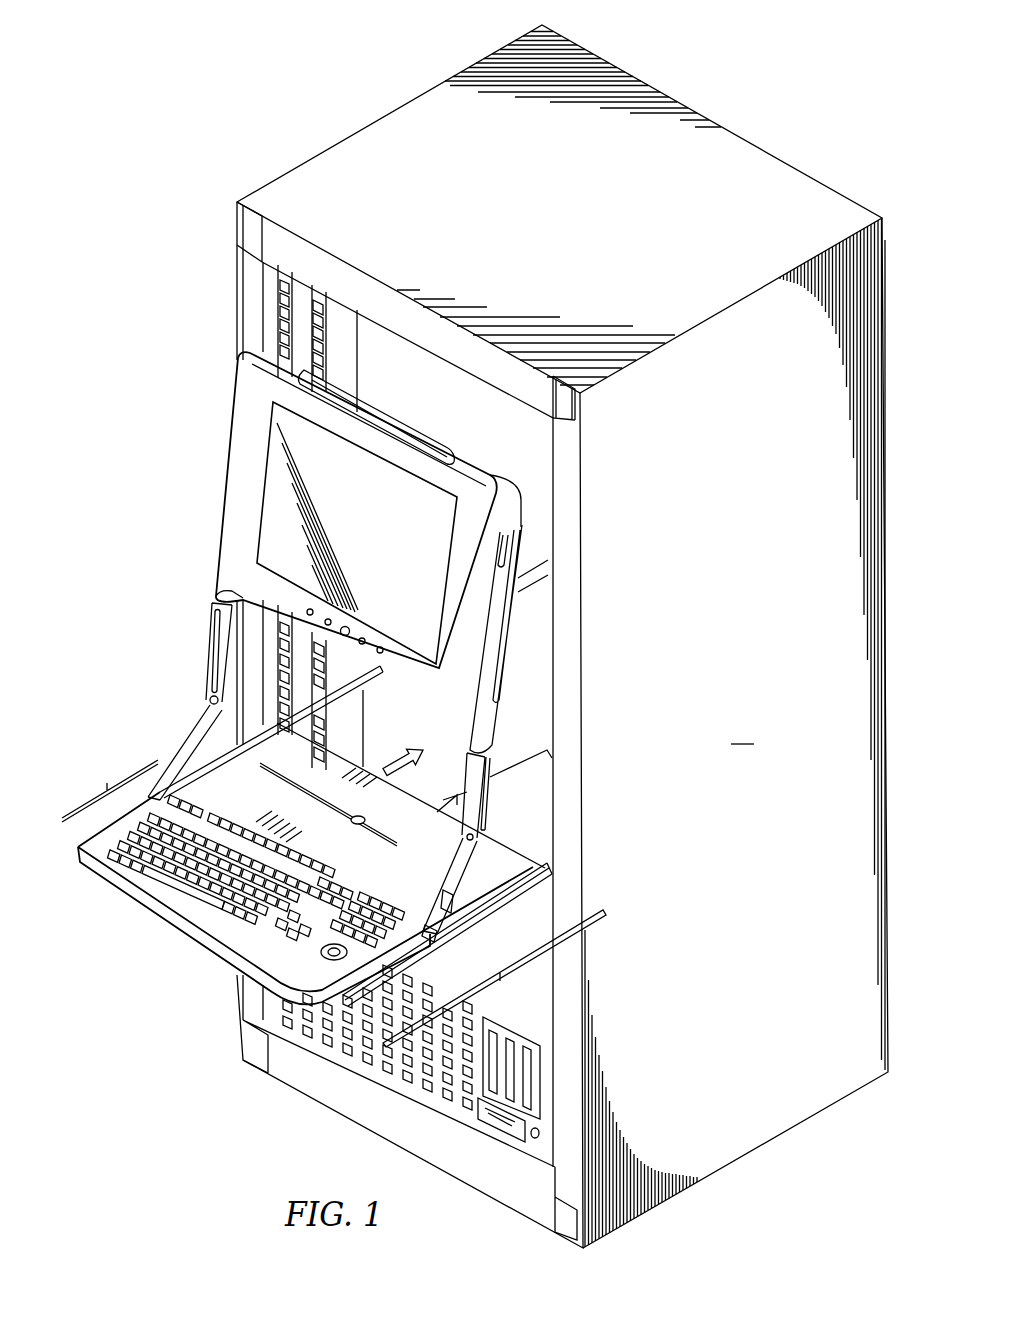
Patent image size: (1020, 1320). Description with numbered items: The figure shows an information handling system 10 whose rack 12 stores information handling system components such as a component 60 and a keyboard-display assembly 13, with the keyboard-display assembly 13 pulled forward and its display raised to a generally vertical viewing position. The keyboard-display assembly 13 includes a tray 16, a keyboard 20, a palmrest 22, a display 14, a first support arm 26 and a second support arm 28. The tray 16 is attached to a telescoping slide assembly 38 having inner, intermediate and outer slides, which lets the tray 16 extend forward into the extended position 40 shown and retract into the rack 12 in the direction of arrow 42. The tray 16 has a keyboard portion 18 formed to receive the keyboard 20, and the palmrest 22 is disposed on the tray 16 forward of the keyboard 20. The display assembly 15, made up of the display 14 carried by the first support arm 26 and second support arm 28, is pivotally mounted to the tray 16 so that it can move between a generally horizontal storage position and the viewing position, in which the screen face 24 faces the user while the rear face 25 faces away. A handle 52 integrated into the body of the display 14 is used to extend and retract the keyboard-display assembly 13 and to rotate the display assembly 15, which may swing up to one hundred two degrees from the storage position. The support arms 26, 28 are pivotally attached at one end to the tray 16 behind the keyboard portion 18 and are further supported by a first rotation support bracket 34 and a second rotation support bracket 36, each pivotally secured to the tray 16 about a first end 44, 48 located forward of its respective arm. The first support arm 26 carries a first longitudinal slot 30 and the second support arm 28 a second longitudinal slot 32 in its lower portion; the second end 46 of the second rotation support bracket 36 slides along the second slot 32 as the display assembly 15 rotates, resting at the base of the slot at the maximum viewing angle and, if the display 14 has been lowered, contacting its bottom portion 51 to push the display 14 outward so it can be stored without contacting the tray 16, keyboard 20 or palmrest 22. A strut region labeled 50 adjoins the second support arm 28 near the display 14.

The information handling system 10 is at (128, 510).
The rack 12 is at (562, 636).
The keyboard-display assembly 13 is at (122, 931).
The display 14 is at (238, 480).
The display assembly 15 is at (145, 638).
The tray 16 is at (235, 735).
The keyboard portion 18 is at (110, 789).
The keyboard 20 is at (340, 868).
The palmrest 22 is at (205, 928).
The screen face 24 is at (397, 555).
The rear face 25 is at (518, 493).
The first support arm 26 is at (212, 623).
The second support arm 28 is at (488, 768).
The first longitudinal slot 30 is at (213, 657).
The second longitudinal slot 32 is at (484, 805).
The first rotation support bracket 34 is at (177, 743).
The second rotation support bracket 36 is at (441, 893).
The slide assembly 38 is at (498, 912).
The extended position 40 is at (494, 978).
The arrow 42 is at (406, 752).
The first end 44 is at (258, 740).
The second end 46 is at (482, 836).
The first end 48 is at (441, 940).
The strut 50 is at (500, 703).
The bottom portion 51 is at (495, 742).
The handle 52 is at (437, 425).
The component 60 is at (410, 1090).